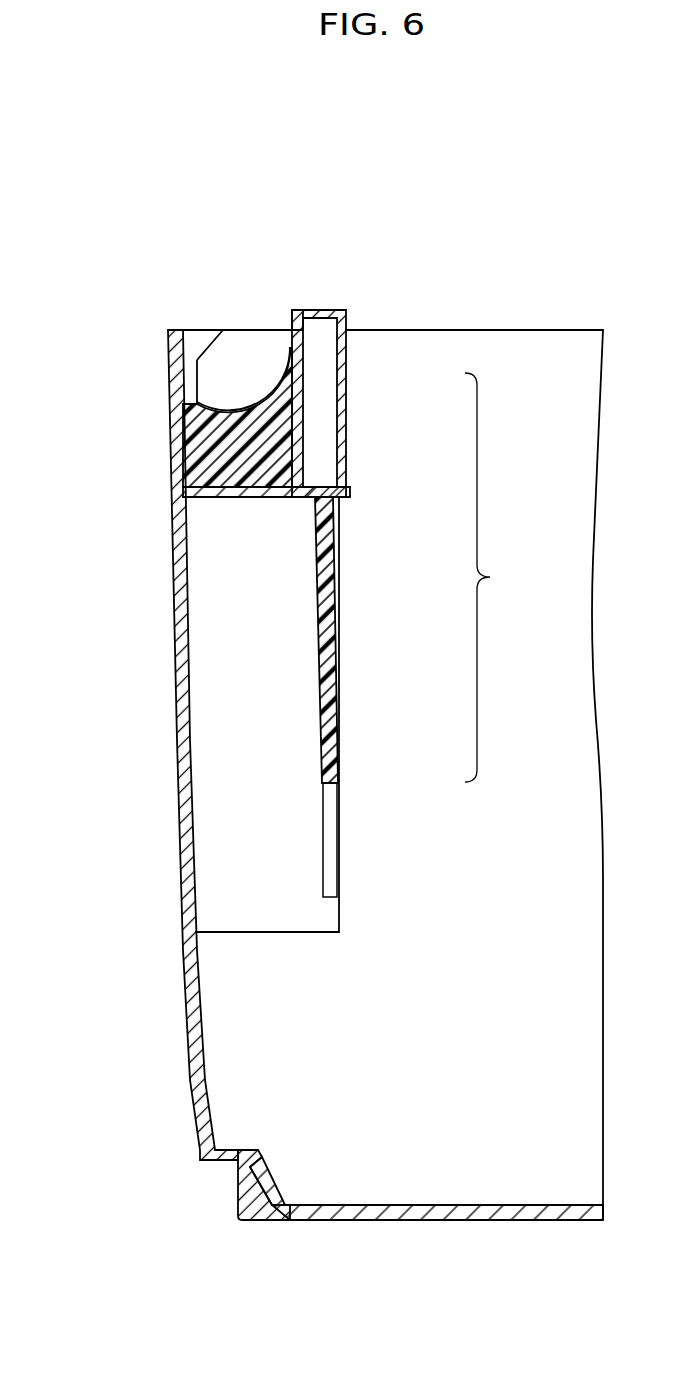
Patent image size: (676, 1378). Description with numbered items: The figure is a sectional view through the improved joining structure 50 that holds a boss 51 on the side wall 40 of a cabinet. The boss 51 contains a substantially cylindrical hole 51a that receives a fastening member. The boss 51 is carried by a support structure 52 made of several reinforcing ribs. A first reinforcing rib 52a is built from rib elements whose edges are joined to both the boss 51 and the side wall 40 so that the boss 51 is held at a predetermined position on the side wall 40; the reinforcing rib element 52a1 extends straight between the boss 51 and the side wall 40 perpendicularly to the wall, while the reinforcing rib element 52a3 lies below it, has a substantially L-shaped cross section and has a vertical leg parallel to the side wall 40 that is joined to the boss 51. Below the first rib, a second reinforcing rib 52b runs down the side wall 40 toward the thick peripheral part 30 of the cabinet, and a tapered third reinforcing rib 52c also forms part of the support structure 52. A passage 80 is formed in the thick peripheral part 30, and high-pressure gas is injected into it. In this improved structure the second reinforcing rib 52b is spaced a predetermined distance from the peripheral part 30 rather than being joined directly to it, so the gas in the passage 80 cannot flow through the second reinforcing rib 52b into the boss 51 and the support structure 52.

The thick peripheral part 30 is at (298, 1220).
The side wall 40 is at (168, 557).
The joining structure 50 is at (365, 295).
The boss 51 is at (343, 310).
The cylindrical hole 51a is at (308, 306).
The support structure 52 is at (498, 577).
The first reinforcing rib 52a is at (270, 425).
The reinforcing rib element 52a1 is at (222, 405).
The reinforcing rib element 52a3 is at (243, 324).
The second reinforcing rib 52b is at (291, 913).
The third reinforcing rib 52c is at (337, 590).
The passage 80 is at (240, 1216).